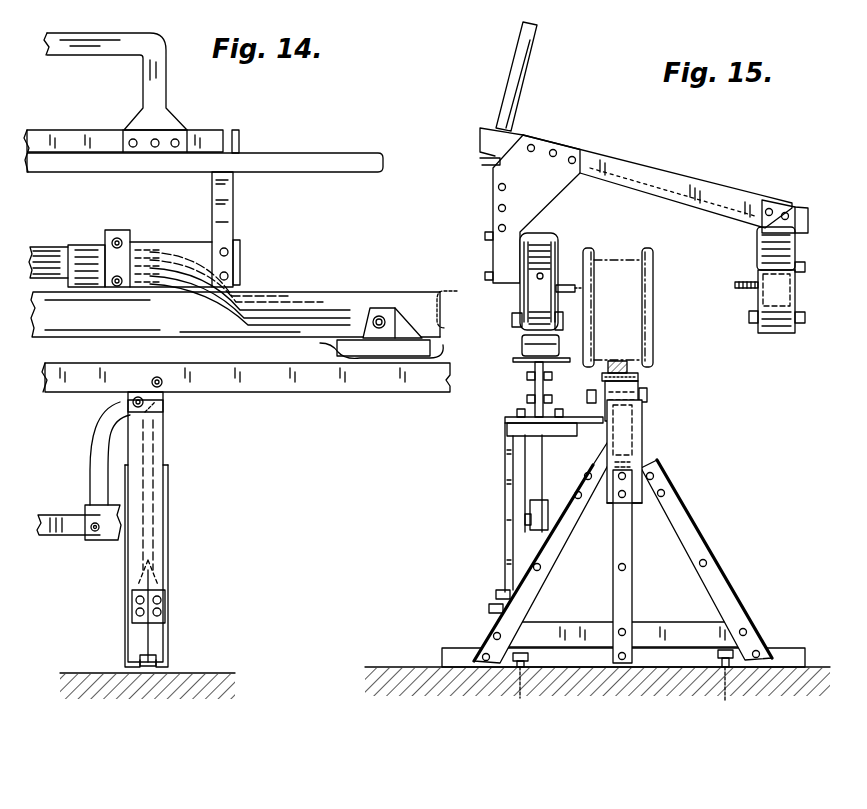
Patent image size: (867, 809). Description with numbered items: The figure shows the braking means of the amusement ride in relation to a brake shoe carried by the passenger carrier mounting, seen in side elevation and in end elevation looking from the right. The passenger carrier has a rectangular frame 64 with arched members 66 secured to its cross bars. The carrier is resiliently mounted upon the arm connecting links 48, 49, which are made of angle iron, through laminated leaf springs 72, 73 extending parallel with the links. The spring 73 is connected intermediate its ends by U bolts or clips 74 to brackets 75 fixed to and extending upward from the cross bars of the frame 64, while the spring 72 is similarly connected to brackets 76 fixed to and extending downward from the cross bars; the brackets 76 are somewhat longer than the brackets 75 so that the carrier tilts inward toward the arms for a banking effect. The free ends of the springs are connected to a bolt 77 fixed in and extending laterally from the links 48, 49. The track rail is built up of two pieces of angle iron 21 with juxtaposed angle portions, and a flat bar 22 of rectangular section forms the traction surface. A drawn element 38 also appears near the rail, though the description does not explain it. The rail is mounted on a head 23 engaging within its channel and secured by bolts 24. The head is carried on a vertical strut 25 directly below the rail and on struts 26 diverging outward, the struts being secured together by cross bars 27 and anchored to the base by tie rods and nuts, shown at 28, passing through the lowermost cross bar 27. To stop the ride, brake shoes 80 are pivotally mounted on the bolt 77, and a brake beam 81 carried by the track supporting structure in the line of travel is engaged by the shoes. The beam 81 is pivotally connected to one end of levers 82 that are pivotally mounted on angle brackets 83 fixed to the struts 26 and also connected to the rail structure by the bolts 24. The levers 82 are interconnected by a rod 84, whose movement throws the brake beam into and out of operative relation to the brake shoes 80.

In FIG. 14, the arched member 66 is at (141, 62).
In FIG. 15, the arched member 66 is at (519, 102).
In FIG. 14, the rectangular frame 64 is at (203, 143).
In FIG. 15, the rectangular frame 64 is at (656, 182).
In FIG. 14, the bracket 76 is at (234, 212).
In FIG. 15, the bracket 76 is at (532, 209).
In FIG. 14, the U bolt or clip 74 is at (120, 240).
In FIG. 15, the U bolt or clip 74 is at (559, 243).
In FIG. 14, the laminated leaf spring 72 is at (238, 302).
In FIG. 15, the laminated leaf spring 72 is at (537, 277).
In FIG. 14, the arm connecting link 48 is at (345, 300).
In FIG. 15, the arm connecting link 48 is at (566, 293).
In FIG. 14, the bolt 77 is at (383, 316).
In FIG. 15, the bolt 77 is at (513, 320).
In FIG. 14, the brake shoe 80 is at (320, 343).
In FIG. 15, the brake shoe 80 is at (521, 347).
In FIG. 14, the brake beam 81 is at (312, 372).
In FIG. 15, the brake beam 81 is at (530, 373).
In FIG. 14, the lever 82 is at (99, 446).
In FIG. 15, the lever 82 is at (533, 389).
In FIG. 14, the angle bracket 83 is at (163, 442).
In FIG. 15, the angle bracket 83 is at (506, 488).
In FIG. 14, the rod 84 is at (58, 522).
In FIG. 15, the rod 84 is at (548, 514).
In FIG. 14, the strut 26 is at (168, 542).
In FIG. 15, the strut 26 is at (546, 553).
In FIG. 15, the bracket 75 is at (775, 209).
In FIG. 15, the laminated leaf spring 73 is at (776, 301).
In FIG. 15, the arm connecting link 49 is at (735, 285).
In FIG. 15, the drum 38 is at (650, 276).
In FIG. 15, the flat bar 22 is at (617, 361).
In FIG. 15, the angle iron 21 is at (602, 378).
In FIG. 15, the bolt 24 is at (648, 398).
In FIG. 15, the head 23 is at (643, 450).
In FIG. 15, the vertical strut 25 is at (632, 569).
In FIG. 15, the cross bar 27 is at (671, 632).
In FIG. 15, the tie rod and nut anchorage 28 is at (624, 687).